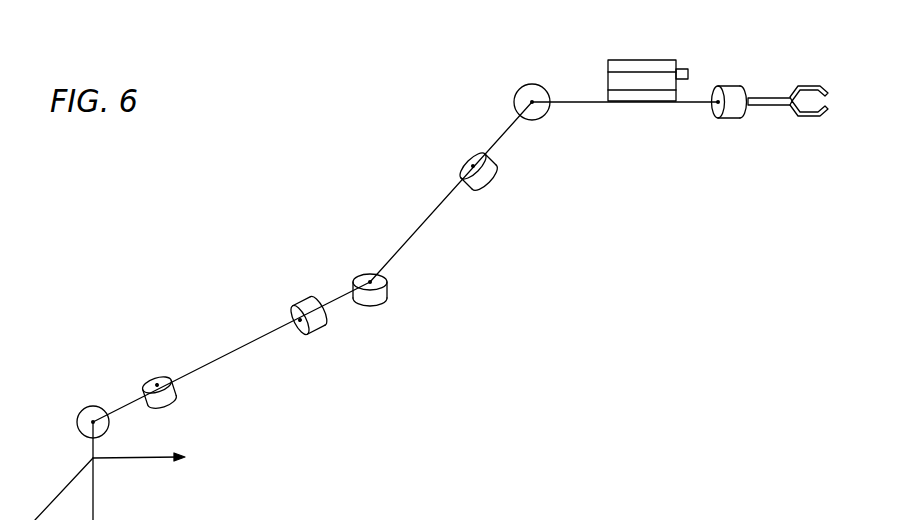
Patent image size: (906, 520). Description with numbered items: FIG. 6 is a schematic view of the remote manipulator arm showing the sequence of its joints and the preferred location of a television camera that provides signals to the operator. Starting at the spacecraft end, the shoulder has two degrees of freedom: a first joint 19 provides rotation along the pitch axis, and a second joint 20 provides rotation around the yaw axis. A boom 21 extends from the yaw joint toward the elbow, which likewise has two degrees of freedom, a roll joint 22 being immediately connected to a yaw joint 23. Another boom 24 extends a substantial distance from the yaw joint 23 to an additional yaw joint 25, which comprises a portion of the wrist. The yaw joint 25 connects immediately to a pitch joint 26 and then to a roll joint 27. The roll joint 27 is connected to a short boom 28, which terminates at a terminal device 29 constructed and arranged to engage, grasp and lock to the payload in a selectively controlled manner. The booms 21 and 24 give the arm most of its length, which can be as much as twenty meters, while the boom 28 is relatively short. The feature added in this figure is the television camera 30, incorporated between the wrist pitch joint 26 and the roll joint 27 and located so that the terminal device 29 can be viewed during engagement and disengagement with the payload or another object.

The first joint 19 is at (88, 406).
The second joint 20 is at (160, 373).
The boom 21 is at (246, 346).
The roll joint 22 is at (308, 303).
The yaw joint 23 is at (389, 293).
The boom 24 is at (419, 228).
The yaw joint 25 is at (467, 157).
The pitch joint 26 is at (534, 122).
The roll joint 27 is at (733, 118).
The short boom 28 is at (765, 97).
The terminal device 29 is at (824, 91).
The television camera 30 is at (640, 60).